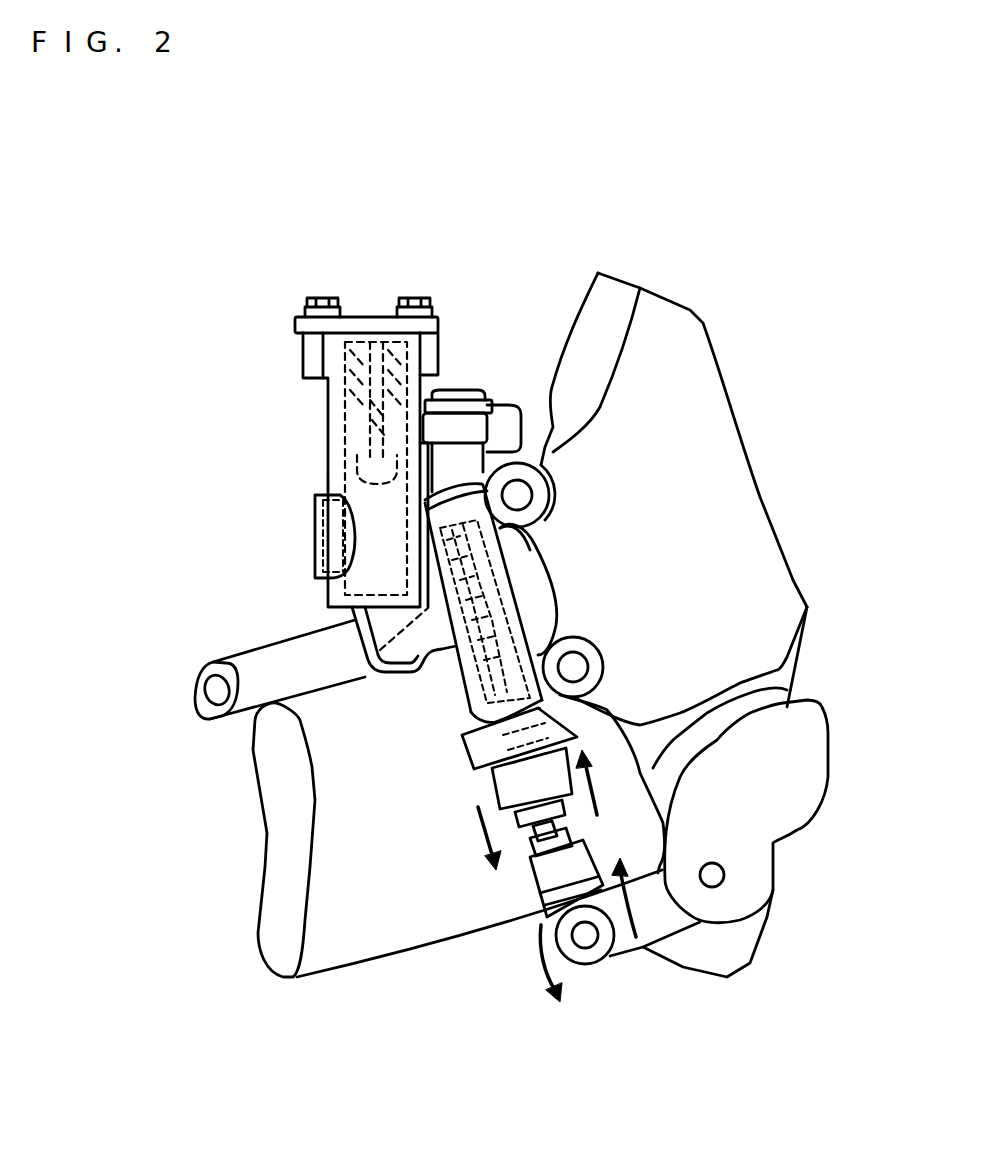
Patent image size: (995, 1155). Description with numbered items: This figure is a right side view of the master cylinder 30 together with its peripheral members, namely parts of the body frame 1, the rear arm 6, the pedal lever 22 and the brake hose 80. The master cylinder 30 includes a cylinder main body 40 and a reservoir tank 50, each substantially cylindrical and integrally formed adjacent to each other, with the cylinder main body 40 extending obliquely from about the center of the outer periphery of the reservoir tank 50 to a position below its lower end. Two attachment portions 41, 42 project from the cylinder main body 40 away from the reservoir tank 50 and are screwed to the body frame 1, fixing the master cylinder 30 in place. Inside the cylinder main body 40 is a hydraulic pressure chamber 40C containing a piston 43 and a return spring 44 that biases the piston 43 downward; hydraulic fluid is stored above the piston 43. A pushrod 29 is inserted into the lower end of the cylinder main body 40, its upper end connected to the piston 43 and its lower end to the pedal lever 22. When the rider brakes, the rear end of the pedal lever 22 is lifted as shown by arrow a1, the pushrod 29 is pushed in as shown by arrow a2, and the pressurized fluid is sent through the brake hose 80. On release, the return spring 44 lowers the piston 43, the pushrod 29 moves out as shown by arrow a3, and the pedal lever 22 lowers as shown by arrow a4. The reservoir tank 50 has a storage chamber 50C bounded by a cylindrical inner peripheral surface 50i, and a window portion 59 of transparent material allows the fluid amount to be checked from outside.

The body frame 1 is at (703, 350).
The rear arm 6 is at (265, 928).
The pedal lever 22 is at (773, 802).
The pushrod 29 is at (528, 855).
The master cylinder 30 is at (296, 276).
The cylinder main body 40 is at (512, 597).
The hydraulic pressure chamber 40C is at (458, 732).
The attachment portion 41 is at (532, 550).
The attachment portion 42 is at (538, 640).
The piston 43 is at (443, 665).
The return spring 44 is at (369, 668).
The reservoir tank 50 is at (328, 418).
The cylindrical inner peripheral surface 50i is at (382, 327).
The storage chamber 50C is at (333, 478).
The window portion 59 is at (312, 530).
The brake hose 80 is at (252, 668).
The arrow a1 is at (640, 905).
The arrow a2 is at (587, 783).
The arrow a3 is at (480, 807).
The arrow a4 is at (540, 967).